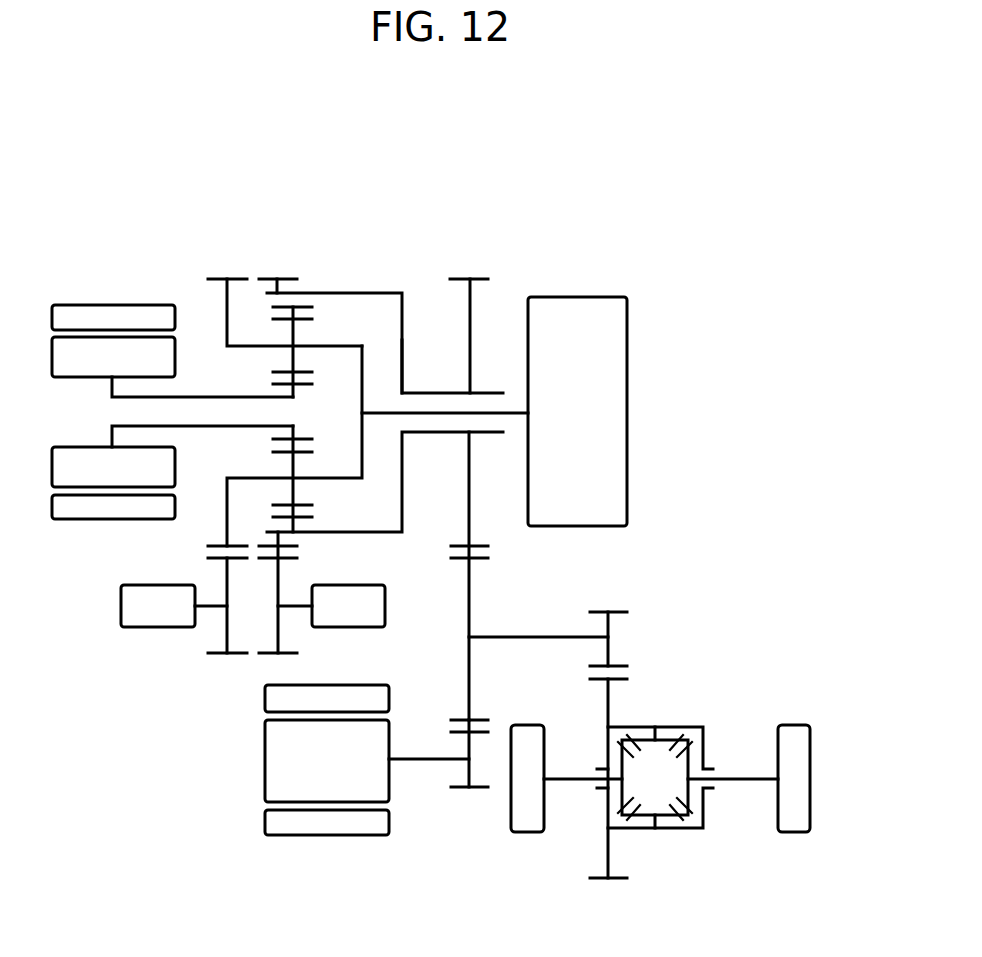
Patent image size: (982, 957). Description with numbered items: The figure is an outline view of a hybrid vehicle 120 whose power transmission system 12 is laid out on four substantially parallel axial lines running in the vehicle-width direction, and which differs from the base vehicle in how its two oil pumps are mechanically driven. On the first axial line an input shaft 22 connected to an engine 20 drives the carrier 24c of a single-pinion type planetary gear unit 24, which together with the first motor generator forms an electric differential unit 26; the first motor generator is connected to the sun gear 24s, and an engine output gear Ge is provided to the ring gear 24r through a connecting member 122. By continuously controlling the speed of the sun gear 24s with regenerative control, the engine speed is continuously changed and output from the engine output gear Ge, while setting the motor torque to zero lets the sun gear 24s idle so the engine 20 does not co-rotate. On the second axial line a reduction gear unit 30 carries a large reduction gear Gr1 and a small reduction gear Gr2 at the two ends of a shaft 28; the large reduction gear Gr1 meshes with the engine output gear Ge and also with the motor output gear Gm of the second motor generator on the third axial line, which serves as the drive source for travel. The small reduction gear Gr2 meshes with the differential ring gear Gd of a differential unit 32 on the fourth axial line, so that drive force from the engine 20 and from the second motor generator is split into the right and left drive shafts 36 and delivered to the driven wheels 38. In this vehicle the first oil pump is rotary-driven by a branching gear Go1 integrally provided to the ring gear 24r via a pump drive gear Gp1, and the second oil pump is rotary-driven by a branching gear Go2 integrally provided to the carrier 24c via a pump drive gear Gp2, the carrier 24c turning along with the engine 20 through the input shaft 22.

The power transmission system 12 is at (131, 197).
The hybrid vehicle 120 is at (503, 158).
The engine 20 is at (617, 358).
The input shaft 22 is at (436, 415).
The electric differential unit 26 is at (332, 224).
The connecting member 122 is at (403, 357).
The single-pinion type planetary gear unit 24 is at (207, 500).
The carrier 24c is at (313, 340).
The sun gear 24s is at (280, 383).
The ring gear 24r is at (308, 517).
The shaft 28 is at (528, 642).
The reduction gear unit 30 is at (688, 623).
The differential unit 32 is at (697, 858).
The drive shafts 36 is at (572, 780).
The driven wheels 38 is at (527, 822).
The branching gear Go1 is at (288, 279).
The branching gear Go2 is at (222, 279).
The engine output gear Ge is at (463, 279).
The pump drive gear Gp1 is at (290, 655).
The pump drive gear Gp2 is at (218, 655).
The large reduction gear Gr1 is at (483, 553).
The small reduction gear Gr2 is at (613, 610).
The differential ring gear Gd is at (623, 679).
The motor output gear Gm is at (465, 787).